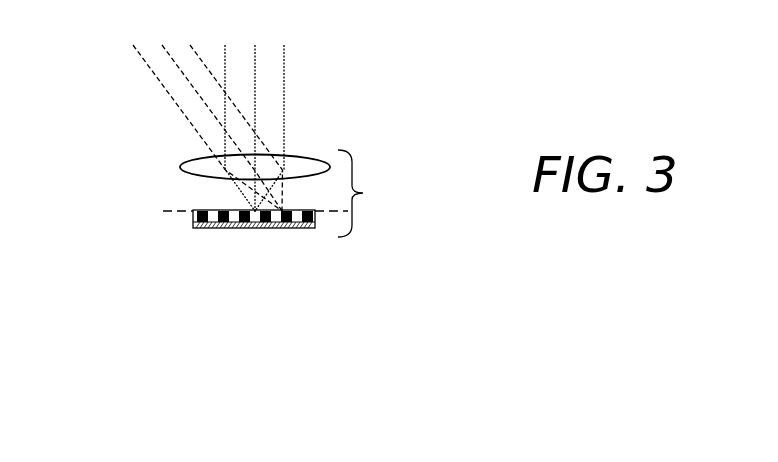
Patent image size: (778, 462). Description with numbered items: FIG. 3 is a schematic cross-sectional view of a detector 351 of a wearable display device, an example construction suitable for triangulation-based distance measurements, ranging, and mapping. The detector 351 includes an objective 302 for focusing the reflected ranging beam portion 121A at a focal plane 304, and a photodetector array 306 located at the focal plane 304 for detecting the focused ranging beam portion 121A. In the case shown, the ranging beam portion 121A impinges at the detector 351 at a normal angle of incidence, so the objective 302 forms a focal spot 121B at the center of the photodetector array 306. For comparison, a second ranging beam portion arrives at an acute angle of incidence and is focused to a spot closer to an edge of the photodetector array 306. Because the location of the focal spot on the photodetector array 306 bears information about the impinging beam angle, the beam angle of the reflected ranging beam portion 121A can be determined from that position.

The reflected ranging beam portion 121A is at (284, 83).
The focal spot 121B is at (250, 228).
The objective 302 is at (180, 166).
The focal plane 304 is at (163, 211).
The photodetector array 306 is at (205, 228).
The detector 351 is at (377, 193).